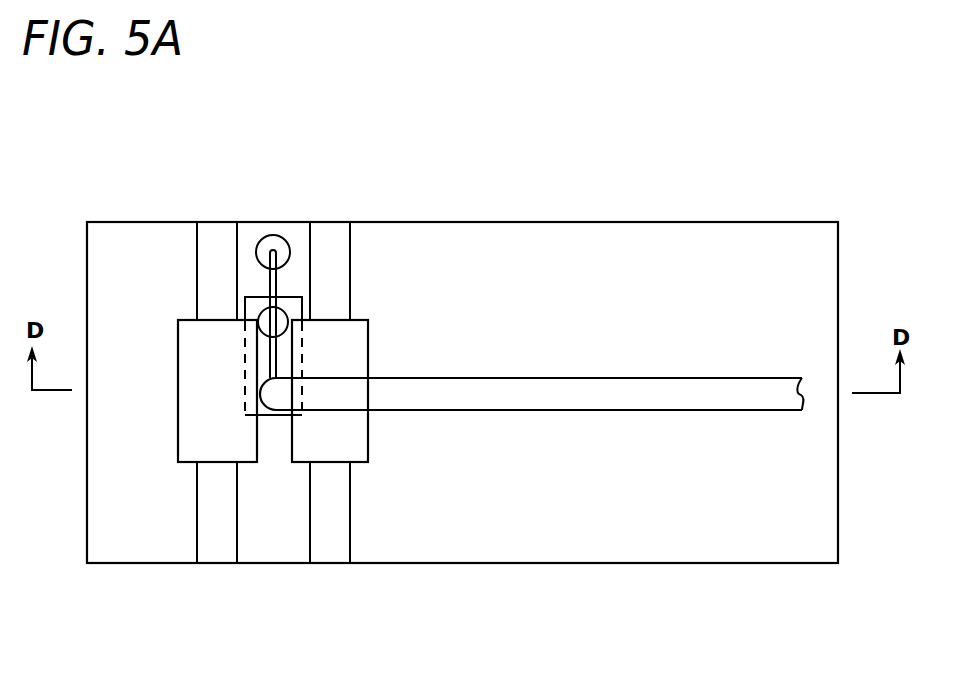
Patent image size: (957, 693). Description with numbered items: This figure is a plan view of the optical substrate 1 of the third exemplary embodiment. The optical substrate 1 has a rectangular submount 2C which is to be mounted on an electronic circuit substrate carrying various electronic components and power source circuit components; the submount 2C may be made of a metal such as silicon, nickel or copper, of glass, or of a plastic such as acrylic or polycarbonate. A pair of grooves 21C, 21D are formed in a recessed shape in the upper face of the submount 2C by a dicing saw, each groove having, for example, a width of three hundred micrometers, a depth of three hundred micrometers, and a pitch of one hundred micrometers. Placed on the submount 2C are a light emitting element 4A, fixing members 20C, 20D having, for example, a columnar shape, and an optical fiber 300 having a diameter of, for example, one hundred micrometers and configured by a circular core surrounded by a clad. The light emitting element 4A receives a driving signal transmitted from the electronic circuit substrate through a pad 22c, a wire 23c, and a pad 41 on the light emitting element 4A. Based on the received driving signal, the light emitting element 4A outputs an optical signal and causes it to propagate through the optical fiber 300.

The optical substrate 1 is at (562, 176).
The submount 2C is at (633, 240).
The light emitting element 4A is at (292, 305).
The pad 41 is at (260, 308).
The pad 22c is at (273, 236).
The wire 23c is at (276, 292).
The fixing member 20C is at (192, 442).
The fixing member 20D is at (353, 443).
The groove 21C is at (213, 552).
The groove 21D is at (328, 543).
The optical fiber 300 is at (543, 395).